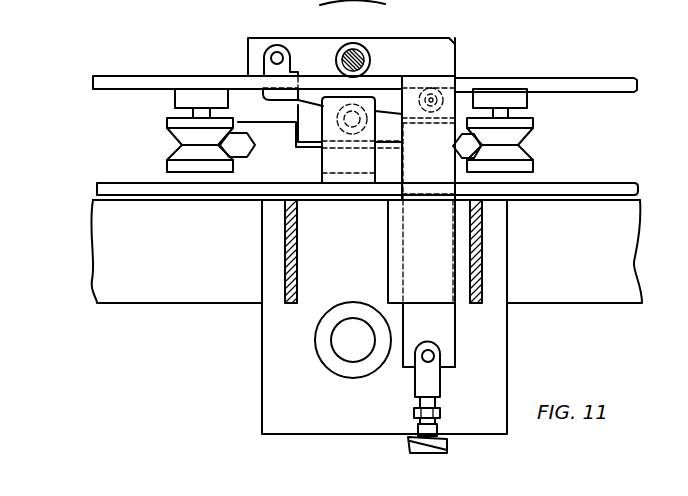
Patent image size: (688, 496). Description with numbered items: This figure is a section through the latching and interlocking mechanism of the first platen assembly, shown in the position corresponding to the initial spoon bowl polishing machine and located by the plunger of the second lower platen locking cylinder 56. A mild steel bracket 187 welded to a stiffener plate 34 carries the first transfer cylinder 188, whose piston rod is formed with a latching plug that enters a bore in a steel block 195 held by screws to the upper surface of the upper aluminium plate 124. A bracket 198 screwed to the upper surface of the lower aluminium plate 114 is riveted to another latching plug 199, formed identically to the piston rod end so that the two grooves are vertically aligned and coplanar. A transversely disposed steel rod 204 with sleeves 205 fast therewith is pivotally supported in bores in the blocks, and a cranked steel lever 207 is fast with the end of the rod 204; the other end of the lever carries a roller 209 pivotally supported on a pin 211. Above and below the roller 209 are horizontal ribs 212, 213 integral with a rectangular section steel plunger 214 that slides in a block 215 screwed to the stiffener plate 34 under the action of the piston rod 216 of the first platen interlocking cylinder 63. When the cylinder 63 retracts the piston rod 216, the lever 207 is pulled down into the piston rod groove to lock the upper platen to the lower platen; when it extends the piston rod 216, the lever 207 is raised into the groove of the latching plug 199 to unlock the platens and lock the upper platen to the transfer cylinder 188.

The stiffener plate 34 is at (273, 385).
The second lower platen locking cylinder 56 is at (318, 340).
The first platen interlocking cylinder 63 is at (443, 442).
The lower aluminium plate 114 is at (110, 183).
The upper aluminium plate 124 is at (598, 84).
The mild steel bracket 187 is at (288, 284).
The first transfer cylinder 188 is at (379, 9).
The steel block 195 is at (437, 50).
The bracket 198 is at (330, 165).
The latching plug 199 is at (358, 112).
The steel rod 204 is at (270, 57).
The sleeves 205 is at (273, 53).
The cranked steel lever 207 is at (318, 84).
The roller 209 is at (445, 88).
The pin 211 is at (436, 98).
The horizontal rib 212 is at (430, 123).
The horizontal rib 213 is at (438, 80).
The plunger 214 is at (442, 326).
The block 215 is at (396, 270).
The piston rod 216 is at (422, 428).